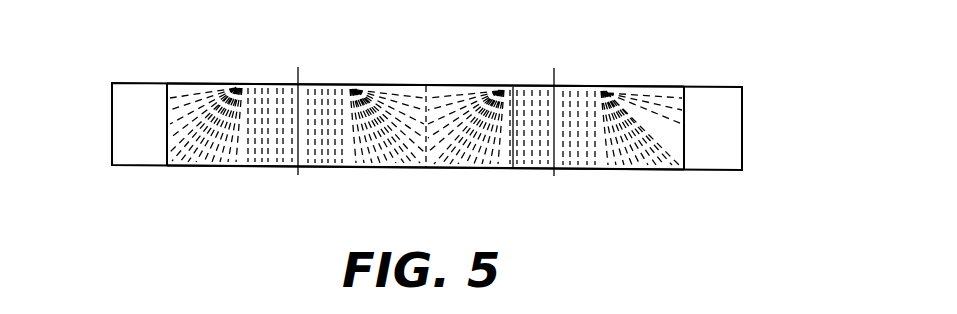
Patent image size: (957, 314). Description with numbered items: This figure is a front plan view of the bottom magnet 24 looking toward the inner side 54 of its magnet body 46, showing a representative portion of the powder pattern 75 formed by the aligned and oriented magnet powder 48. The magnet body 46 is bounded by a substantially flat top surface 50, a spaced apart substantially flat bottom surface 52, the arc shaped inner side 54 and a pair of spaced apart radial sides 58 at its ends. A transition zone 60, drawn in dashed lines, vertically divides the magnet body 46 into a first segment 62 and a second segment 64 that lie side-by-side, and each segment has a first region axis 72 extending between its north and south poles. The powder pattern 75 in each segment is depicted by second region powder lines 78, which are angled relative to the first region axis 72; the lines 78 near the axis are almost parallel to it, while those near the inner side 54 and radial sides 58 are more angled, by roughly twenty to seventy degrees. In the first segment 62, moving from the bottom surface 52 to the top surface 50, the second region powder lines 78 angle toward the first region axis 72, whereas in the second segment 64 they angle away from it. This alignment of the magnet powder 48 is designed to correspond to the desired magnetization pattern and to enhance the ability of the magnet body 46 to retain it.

The magnet 24 is at (761, 66).
The magnet body 46 is at (752, 150).
The magnet powder 48 is at (670, 95).
The top surface 50 is at (513, 87).
The bottom surface 52 is at (196, 167).
The inner side 54 is at (640, 77).
The radial sides 58 is at (107, 113).
The transition zone 60 is at (435, 86).
The first segment 62 is at (331, 75).
The second segment 64 is at (583, 74).
The first region axis 72 is at (297, 176).
The powder pattern 75 is at (178, 84).
The second region powder lines 78 is at (264, 90).